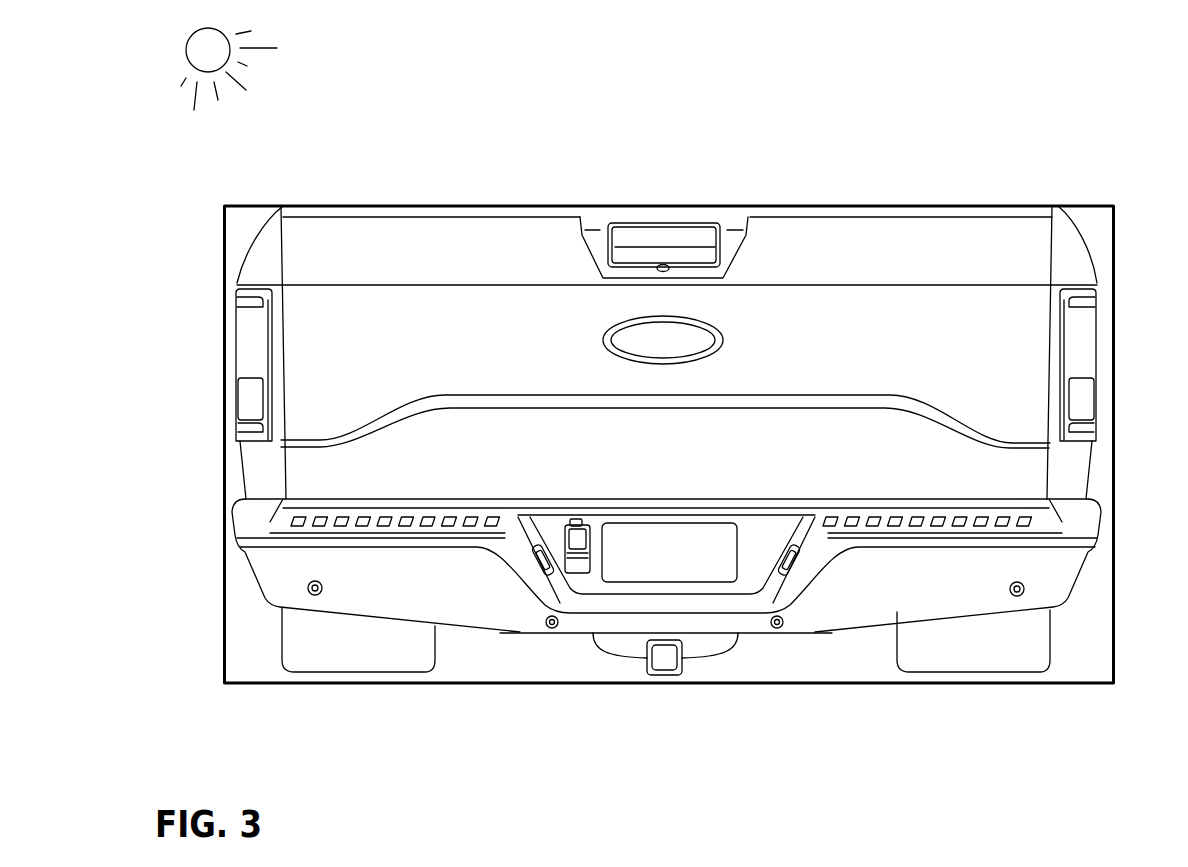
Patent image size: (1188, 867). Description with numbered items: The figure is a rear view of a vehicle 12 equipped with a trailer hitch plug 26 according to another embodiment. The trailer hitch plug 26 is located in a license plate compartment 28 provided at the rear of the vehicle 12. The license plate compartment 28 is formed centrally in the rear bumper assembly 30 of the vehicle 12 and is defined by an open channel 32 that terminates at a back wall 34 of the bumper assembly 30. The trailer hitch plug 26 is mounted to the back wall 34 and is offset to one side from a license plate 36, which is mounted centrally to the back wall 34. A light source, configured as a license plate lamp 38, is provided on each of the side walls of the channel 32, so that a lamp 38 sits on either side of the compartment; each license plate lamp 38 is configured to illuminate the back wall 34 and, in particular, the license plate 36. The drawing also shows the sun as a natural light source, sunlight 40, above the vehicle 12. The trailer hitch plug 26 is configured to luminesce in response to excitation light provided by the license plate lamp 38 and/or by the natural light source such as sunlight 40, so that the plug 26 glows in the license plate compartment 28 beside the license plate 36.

The vehicle 12 is at (977, 195).
The trailer hitch plug 26 is at (580, 562).
The license plate compartment 28 is at (651, 601).
The rear bumper assembly 30 is at (978, 578).
The open channel 32 is at (698, 600).
The back wall 34 is at (752, 533).
The license plate 36 is at (735, 566).
The license plate lamp 38 is at (535, 558).
The sunlight 40 is at (265, 48).